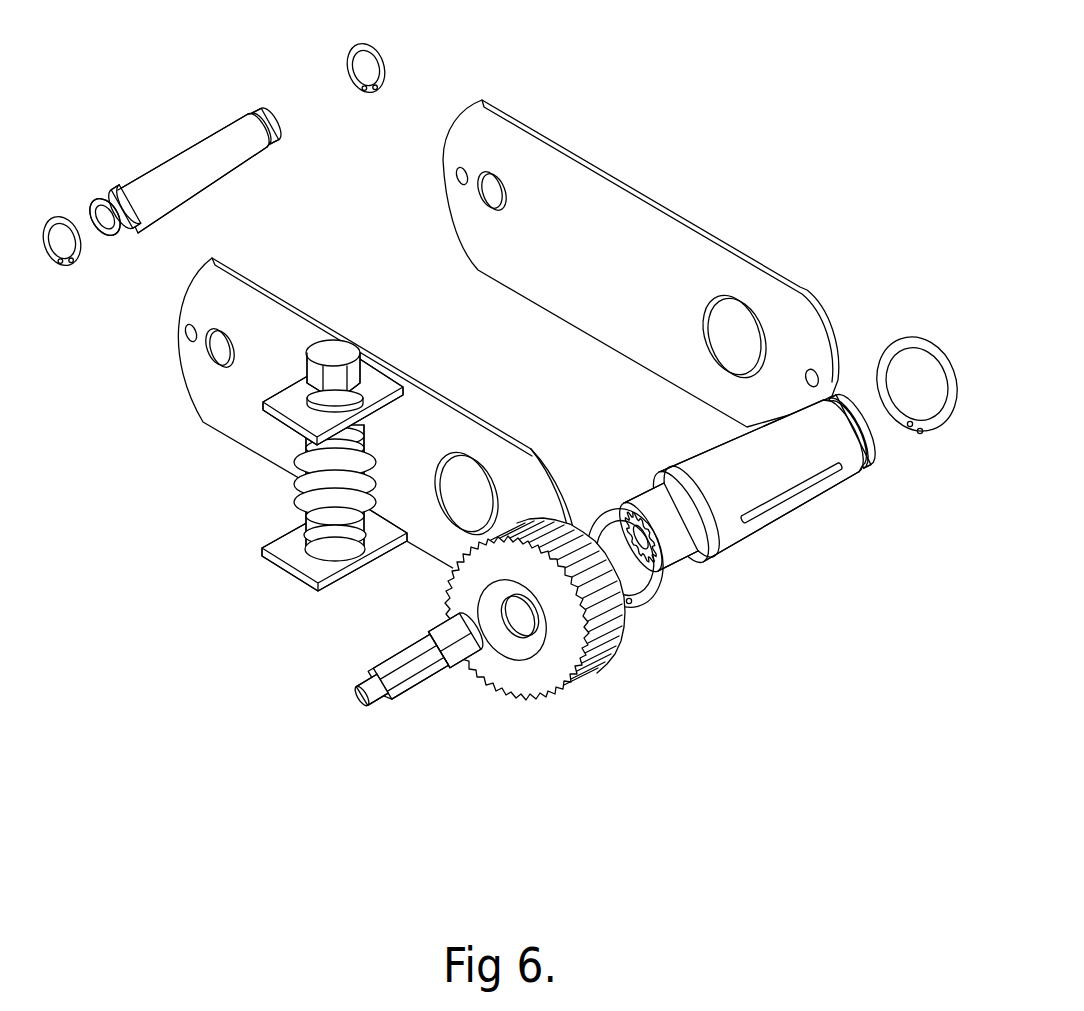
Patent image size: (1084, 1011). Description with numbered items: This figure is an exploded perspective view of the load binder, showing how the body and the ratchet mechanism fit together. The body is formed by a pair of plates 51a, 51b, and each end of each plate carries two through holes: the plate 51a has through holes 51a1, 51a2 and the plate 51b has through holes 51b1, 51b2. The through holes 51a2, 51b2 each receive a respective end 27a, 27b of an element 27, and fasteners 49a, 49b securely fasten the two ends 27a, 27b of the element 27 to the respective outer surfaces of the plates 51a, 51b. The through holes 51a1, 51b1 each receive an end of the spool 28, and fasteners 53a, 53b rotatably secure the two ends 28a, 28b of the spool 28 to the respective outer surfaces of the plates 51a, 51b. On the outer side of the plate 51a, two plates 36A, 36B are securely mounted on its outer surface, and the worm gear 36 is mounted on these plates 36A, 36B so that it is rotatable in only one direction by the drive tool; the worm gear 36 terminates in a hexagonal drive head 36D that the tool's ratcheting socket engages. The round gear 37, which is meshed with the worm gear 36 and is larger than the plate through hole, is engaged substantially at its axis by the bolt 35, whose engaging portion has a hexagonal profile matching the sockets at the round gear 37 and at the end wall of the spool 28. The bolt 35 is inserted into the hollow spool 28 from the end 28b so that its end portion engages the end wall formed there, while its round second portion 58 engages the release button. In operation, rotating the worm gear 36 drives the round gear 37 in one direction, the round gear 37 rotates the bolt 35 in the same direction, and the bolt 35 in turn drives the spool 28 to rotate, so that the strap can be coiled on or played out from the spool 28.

The element 27 is at (205, 163).
The end of element 27a is at (265, 112).
The end of element 27b is at (107, 195).
The fastener 49a is at (65, 273).
The fastener 49b is at (378, 64).
The plate 51a is at (437, 410).
The through hole 51a1 is at (467, 490).
The through hole 51a2 is at (220, 342).
The plate 51b is at (643, 195).
The through hole 51b1 is at (733, 327).
The through hole 51b2 is at (493, 192).
The fastener 53a is at (917, 338).
The fastener 53b is at (650, 593).
The worm gear 36 is at (302, 497).
The plate 36A is at (285, 397).
The plate 36B is at (297, 557).
The hexagonal drive head 36D is at (338, 355).
The spool 28 is at (767, 473).
The end of spool 28a is at (865, 437).
The end of spool 28b is at (690, 545).
The bolt 35 is at (430, 680).
The round gear 37 is at (543, 670).
The round second portion 58 is at (357, 706).